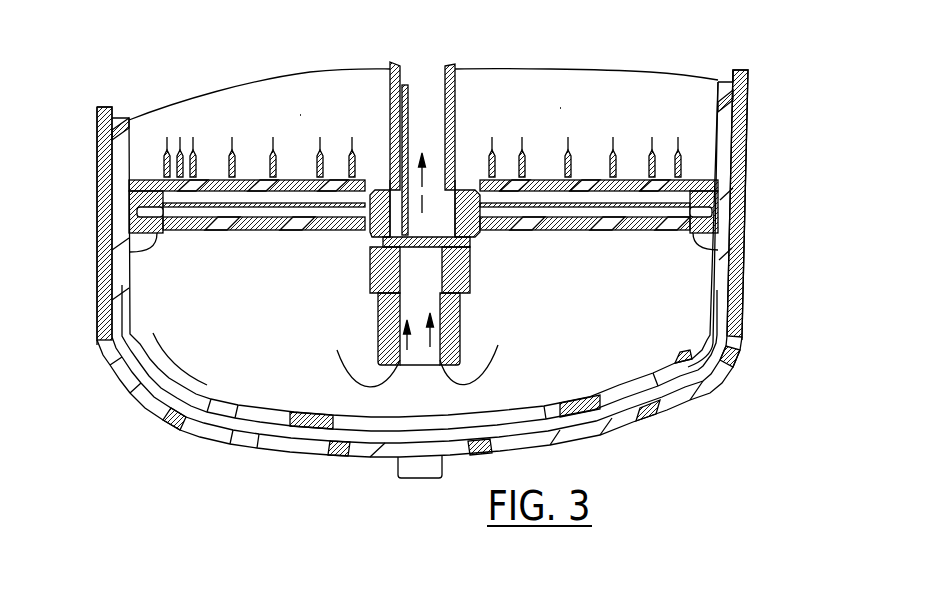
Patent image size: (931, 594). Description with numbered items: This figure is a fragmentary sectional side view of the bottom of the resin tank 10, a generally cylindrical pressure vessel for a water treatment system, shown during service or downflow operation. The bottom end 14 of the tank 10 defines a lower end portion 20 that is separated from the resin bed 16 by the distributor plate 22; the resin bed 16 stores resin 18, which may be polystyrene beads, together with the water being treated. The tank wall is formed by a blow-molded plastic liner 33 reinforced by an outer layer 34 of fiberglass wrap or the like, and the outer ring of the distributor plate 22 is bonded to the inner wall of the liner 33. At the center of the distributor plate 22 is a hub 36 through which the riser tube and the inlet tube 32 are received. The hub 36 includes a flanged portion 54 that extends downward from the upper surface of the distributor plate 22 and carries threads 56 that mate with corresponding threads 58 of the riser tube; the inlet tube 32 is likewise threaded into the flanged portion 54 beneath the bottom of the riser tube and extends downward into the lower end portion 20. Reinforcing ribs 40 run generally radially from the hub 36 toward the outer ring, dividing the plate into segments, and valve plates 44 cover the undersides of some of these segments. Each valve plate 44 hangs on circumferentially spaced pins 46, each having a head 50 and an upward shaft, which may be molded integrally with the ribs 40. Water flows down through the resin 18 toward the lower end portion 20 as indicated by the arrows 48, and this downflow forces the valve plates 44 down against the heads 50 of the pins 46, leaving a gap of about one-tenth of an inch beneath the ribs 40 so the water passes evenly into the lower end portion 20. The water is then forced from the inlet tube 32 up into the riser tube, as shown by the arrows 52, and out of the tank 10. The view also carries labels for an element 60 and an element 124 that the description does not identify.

The resin tank 10 is at (753, 372).
The bottom end 14 is at (305, 453).
The resin bed 16 is at (685, 107).
The resin 18 is at (630, 100).
The lower end portion 20 is at (710, 377).
The distributor plate 22 is at (182, 167).
The inlet tube 32 is at (378, 315).
The liner 33 is at (723, 327).
The layer of fiberglass wrap 34 is at (738, 302).
The central hub 36 is at (472, 237).
The reinforcing ribs 40 is at (207, 200).
The valve plates 44 is at (263, 230).
The pins 46 is at (143, 235).
The arrows 48 is at (167, 157).
The heads 50 is at (157, 250).
The arrows 52 is at (435, 185).
The flanged portion 54 is at (385, 195).
The threads 56 is at (386, 175).
The threads 58 is at (367, 237).
The tube wall 60 is at (458, 178).
The central riser tube 124 is at (432, 180).